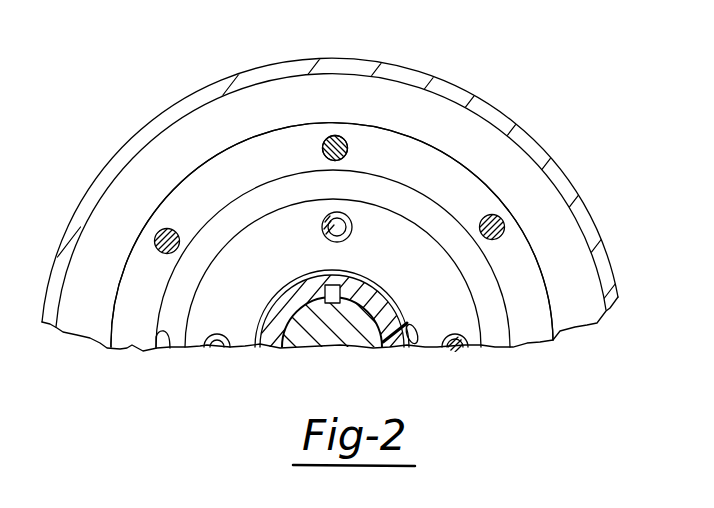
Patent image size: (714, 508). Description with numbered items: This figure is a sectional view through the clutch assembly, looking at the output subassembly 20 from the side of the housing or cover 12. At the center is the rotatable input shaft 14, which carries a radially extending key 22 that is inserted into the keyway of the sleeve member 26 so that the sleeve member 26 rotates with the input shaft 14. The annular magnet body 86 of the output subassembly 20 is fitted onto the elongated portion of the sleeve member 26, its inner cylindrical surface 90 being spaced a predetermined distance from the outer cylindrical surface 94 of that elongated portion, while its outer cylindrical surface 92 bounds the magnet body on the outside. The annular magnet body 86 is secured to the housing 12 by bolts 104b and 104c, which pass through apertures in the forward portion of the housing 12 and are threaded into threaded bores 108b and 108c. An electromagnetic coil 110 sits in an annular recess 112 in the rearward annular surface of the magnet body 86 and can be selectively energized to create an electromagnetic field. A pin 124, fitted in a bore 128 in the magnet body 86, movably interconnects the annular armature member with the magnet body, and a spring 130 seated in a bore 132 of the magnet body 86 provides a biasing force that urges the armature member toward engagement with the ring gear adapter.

The housing or cover 12 is at (538, 152).
The input shaft 14 is at (312, 333).
The output subassembly 20 is at (392, 126).
The key 22 is at (352, 296).
The sleeve member 26 is at (266, 341).
The annular magnet body 86 is at (192, 347).
The inner cylindrical surface 90 is at (383, 342).
The outer cylindrical surface 92 is at (438, 150).
The outer cylindrical surface of the elongated portion 94 is at (405, 343).
The bolt 104b is at (158, 228).
The bolt 104c is at (496, 214).
The threaded bore 108b is at (157, 231).
The threaded bore 108c is at (506, 229).
The electromagnetic coil 110 is at (501, 340).
The annular recess 112 is at (160, 348).
The pin 124 is at (346, 140).
The bore 128 is at (331, 138).
The spring 130 is at (456, 345).
The bore 132 is at (325, 223).